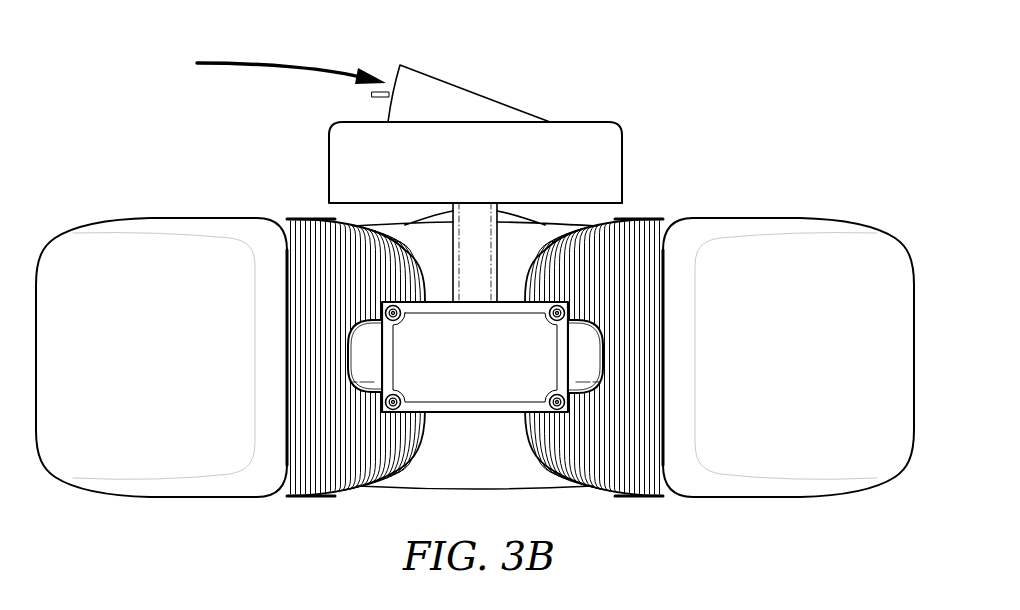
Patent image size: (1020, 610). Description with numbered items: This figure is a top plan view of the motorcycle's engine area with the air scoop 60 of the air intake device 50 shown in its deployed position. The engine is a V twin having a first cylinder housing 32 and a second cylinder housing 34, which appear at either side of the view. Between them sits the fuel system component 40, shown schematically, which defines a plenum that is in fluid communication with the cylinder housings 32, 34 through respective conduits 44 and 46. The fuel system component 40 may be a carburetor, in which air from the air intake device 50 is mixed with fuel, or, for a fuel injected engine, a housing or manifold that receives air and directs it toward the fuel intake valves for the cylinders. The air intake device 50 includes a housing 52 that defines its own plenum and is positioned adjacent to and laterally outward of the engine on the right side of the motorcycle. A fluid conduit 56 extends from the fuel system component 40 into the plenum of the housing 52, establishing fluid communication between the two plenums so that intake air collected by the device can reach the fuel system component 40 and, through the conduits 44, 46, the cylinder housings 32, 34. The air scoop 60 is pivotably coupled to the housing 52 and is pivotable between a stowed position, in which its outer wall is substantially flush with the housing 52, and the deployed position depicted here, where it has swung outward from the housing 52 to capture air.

The first cylinder housing 32 is at (122, 217).
The second cylinder housing 34 is at (828, 217).
The fuel system component 40 is at (475, 417).
The conduit 44 is at (367, 357).
The conduit 46 is at (583, 358).
The air intake device 50 is at (302, 160).
The housing 52 is at (622, 163).
The fluid conduit 56 is at (472, 290).
The air scoop 60 is at (482, 76).